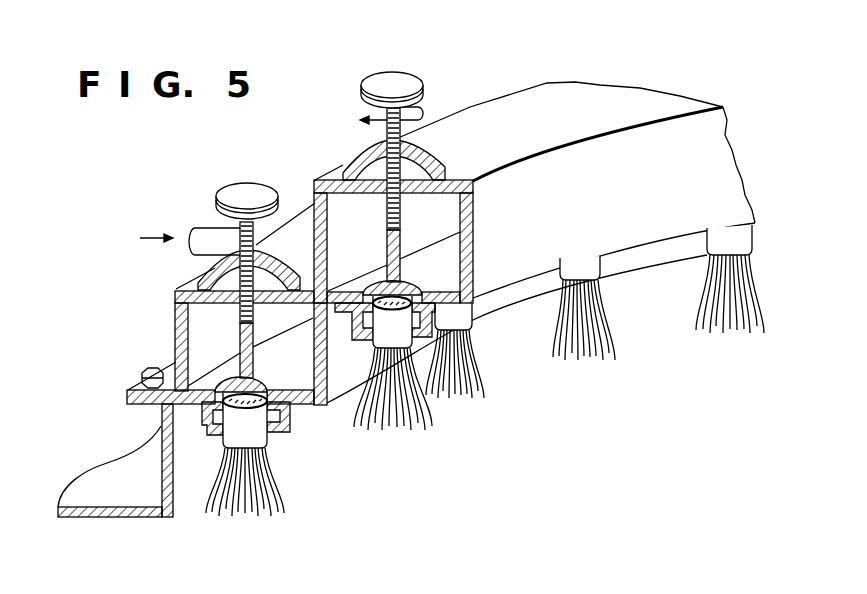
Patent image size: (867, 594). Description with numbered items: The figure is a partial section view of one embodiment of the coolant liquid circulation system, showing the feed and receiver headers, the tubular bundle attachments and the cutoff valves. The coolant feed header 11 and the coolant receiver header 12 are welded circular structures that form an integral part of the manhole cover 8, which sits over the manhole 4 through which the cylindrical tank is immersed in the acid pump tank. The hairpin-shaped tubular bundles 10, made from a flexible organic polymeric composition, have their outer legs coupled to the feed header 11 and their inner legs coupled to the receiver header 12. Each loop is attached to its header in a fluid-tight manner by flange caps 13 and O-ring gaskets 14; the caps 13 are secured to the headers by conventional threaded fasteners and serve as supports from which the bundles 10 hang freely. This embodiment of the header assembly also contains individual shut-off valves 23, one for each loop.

The manhole 4 is at (160, 428).
The manhole cover 8 is at (127, 397).
The hairpin-shaped tubular bundles 10 is at (249, 498).
The coolant feed header 11 is at (193, 318).
The coolant receiver header 12 is at (313, 195).
The flange caps 13 is at (290, 417).
The O-ring gaskets 14 is at (285, 435).
The shut-off valves 23 is at (238, 197).